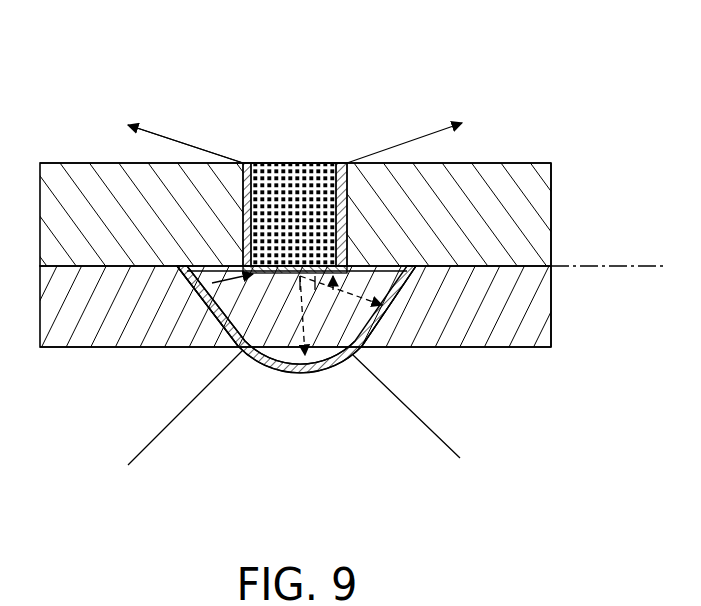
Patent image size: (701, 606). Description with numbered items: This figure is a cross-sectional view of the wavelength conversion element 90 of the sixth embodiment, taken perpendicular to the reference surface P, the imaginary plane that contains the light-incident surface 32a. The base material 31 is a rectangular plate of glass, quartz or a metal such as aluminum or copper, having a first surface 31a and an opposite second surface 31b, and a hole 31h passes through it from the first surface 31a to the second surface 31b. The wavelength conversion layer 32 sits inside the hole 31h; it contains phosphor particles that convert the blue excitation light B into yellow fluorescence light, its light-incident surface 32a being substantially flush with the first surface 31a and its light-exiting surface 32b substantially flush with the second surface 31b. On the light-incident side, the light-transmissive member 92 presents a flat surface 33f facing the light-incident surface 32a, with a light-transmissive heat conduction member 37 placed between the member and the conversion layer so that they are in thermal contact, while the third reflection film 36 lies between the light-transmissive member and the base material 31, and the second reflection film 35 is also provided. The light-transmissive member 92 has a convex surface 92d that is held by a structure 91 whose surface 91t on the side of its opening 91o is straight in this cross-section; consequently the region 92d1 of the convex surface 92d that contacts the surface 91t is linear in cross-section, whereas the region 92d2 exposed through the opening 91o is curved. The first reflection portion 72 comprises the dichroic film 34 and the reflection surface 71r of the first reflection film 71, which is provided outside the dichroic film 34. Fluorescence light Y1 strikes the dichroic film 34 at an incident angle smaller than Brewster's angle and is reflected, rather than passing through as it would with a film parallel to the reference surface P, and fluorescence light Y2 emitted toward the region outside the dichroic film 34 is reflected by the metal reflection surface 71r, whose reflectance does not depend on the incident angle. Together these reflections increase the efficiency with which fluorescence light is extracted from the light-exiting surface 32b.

The wavelength conversion element 90 is at (192, 80).
The base material 31 is at (450, 163).
The second surface 31b is at (510, 163).
The first surface 31a is at (548, 268).
The hole 31h is at (334, 128).
The structure 91 is at (516, 318).
The opening 91o is at (358, 255).
The surface 91t is at (205, 337).
The first reflection portion 72 is at (108, 347).
The wavelength conversion layer 32 is at (325, 163).
The light-incident surface 32a is at (285, 360).
The light-exiting surface 32b is at (300, 163).
The flat surface 33f is at (385, 266).
The dichroic film 34 is at (285, 374).
The second reflection film 35 is at (232, 250).
The third reflection film 36 is at (223, 266).
The heat conduction member 37 is at (250, 338).
The first reflection film 71 is at (185, 286).
The reflection surface 71r is at (212, 283).
The light-transmissive member 92 is at (262, 374).
The convex surface 92d is at (260, 374).
The region 92d1 is at (180, 303).
The region 92d2 is at (345, 360).
The fluorescence light Y1 is at (163, 132).
The fluorescence light Y2 is at (385, 312).
The reference surface P is at (605, 266).
The blue excitation light B is at (150, 447).